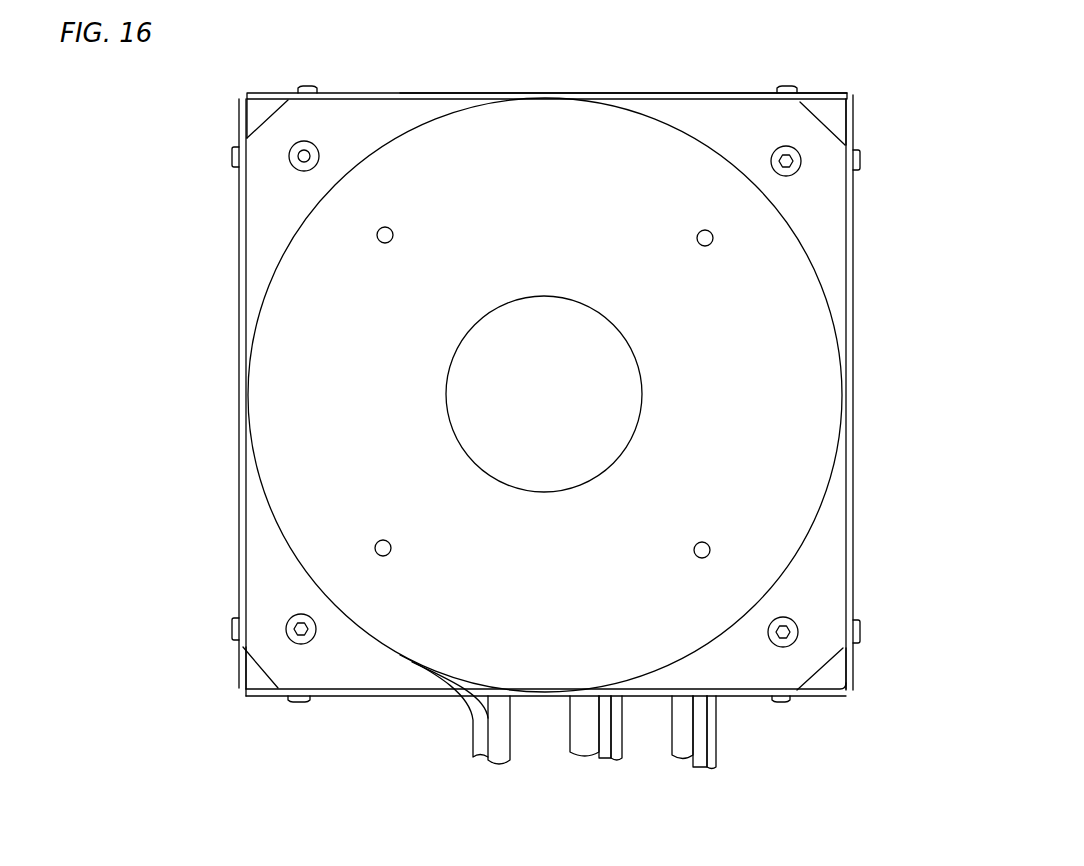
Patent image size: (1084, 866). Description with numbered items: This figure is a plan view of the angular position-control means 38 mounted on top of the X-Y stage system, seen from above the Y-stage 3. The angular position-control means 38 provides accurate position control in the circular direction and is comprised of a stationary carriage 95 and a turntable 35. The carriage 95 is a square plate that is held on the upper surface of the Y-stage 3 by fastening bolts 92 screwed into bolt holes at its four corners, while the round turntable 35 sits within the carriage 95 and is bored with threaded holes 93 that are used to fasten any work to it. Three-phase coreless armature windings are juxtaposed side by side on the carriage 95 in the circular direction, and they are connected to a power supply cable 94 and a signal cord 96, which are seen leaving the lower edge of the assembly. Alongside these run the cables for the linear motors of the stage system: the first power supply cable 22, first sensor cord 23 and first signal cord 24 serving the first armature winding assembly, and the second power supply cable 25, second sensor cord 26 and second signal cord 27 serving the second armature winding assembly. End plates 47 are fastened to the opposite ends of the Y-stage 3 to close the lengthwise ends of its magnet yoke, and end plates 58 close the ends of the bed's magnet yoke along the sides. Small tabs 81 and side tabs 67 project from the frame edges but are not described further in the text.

The Y-stage 3 is at (835, 117).
The first power supply cable 22 is at (585, 740).
The first sensor cord 23 is at (605, 752).
The first signal cord 24 is at (620, 735).
The second power supply cable 25 is at (683, 745).
The second sensor cord 26 is at (702, 752).
The second signal cord 27 is at (715, 738).
The turntable 35 is at (760, 420).
The angular position-control means 38 is at (708, 93).
The end plates 47 is at (390, 93).
The end plates 58 is at (240, 285).
The side tab 67 is at (230, 160).
The mounting tab 81 is at (305, 88).
The fastening bolts 92 is at (303, 153).
The threaded holes 93 is at (705, 247).
The power supply cable 94 is at (503, 740).
The stationary carriage 95 is at (748, 142).
The signal cord 96 is at (475, 738).